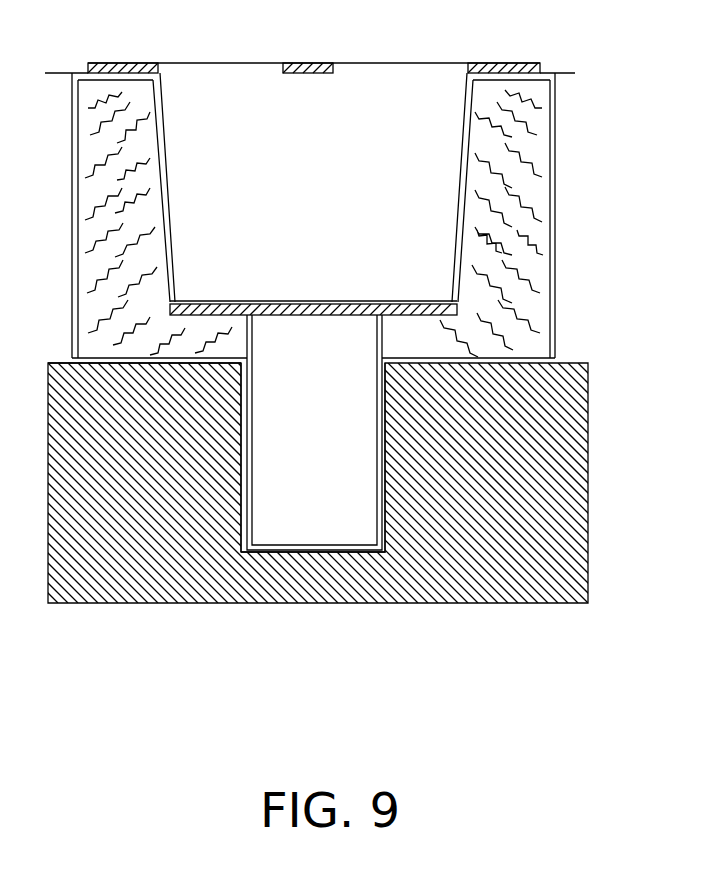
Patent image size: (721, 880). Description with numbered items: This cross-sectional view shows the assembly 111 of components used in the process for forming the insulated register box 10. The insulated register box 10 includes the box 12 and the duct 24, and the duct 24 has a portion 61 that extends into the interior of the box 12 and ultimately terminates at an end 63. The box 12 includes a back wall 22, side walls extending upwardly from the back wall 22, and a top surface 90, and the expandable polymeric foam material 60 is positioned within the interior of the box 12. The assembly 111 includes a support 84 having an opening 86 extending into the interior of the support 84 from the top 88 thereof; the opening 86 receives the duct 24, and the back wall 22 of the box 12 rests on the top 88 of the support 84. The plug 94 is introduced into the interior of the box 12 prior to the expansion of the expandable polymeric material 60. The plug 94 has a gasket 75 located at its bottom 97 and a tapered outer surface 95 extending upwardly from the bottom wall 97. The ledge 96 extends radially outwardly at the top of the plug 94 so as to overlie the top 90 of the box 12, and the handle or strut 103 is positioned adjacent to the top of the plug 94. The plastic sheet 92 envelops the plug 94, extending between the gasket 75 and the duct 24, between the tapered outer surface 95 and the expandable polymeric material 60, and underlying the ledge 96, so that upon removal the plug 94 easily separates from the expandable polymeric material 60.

The insulated register box 10 is at (555, 237).
The box 12 is at (555, 297).
The back wall 22 is at (487, 358).
The duct 24 is at (252, 465).
The expandable polymeric foam material 60 is at (530, 205).
The portion of duct 61 is at (252, 342).
The end of duct 63 is at (375, 327).
The gasket 75 is at (395, 300).
The support 84 is at (588, 453).
The opening 86 is at (241, 497).
The top of support 88 is at (57, 363).
The top surface of box 90 is at (517, 73).
The plastic sheet 92 is at (567, 72).
The plug 94 is at (315, 213).
The tapered outer surface 95 is at (168, 185).
The ledge 96 is at (118, 62).
The bottom of plug 97 is at (223, 300).
The handle 103 is at (302, 78).
The assembly 111 is at (602, 148).